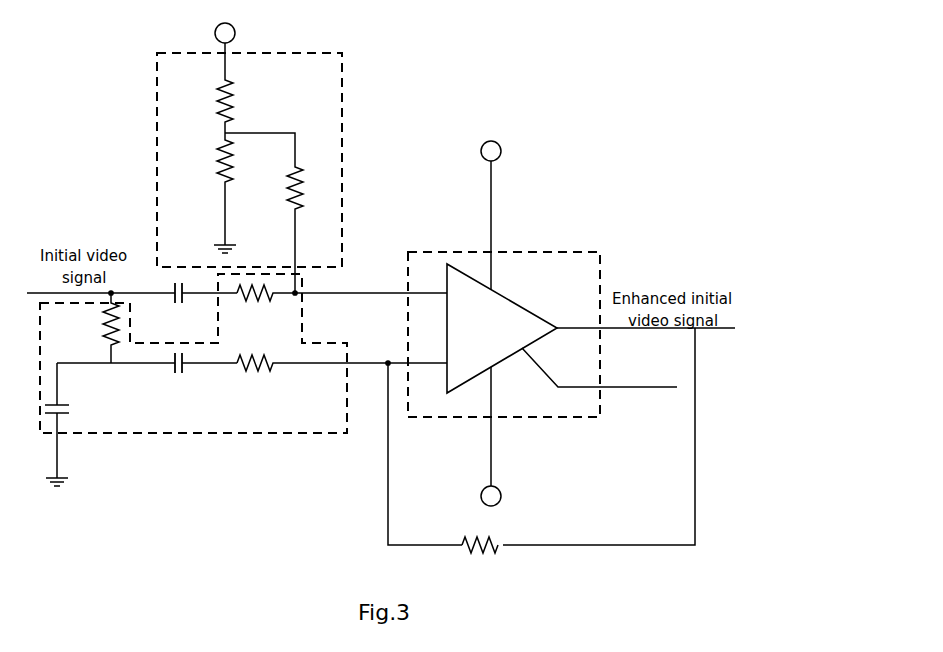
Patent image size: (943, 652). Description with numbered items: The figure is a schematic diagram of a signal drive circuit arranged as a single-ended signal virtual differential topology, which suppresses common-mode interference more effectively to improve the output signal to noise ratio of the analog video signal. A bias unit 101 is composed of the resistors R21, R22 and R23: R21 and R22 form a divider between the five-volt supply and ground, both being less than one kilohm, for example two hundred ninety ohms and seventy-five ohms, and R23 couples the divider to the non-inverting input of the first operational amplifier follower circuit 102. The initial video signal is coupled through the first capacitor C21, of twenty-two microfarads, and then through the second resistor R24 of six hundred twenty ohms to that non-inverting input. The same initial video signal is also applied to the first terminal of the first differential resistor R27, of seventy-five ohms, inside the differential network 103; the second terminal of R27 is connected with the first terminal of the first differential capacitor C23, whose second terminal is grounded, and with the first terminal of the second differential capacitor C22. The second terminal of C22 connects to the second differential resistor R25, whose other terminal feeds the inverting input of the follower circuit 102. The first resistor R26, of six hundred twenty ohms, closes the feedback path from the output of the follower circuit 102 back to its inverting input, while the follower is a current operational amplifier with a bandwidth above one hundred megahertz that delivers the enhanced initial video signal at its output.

The bias unit 101 is at (294, 159).
The first operational amplifier follower circuit 102 is at (600, 262).
The differential network 103 is at (193, 380).
The bias resistor R21 is at (204, 88).
The bias resistor R22 is at (206, 193).
The bias resistor R23 is at (343, 141).
The second resistor R24 is at (257, 307).
The second differential resistor R25 is at (257, 377).
The first resistor R26 is at (540, 455).
The first differential resistor R27 is at (89, 327).
The first capacitor C21 is at (176, 306).
The second differential capacitor C22 is at (176, 376).
The first differential capacitor C23 is at (79, 424).